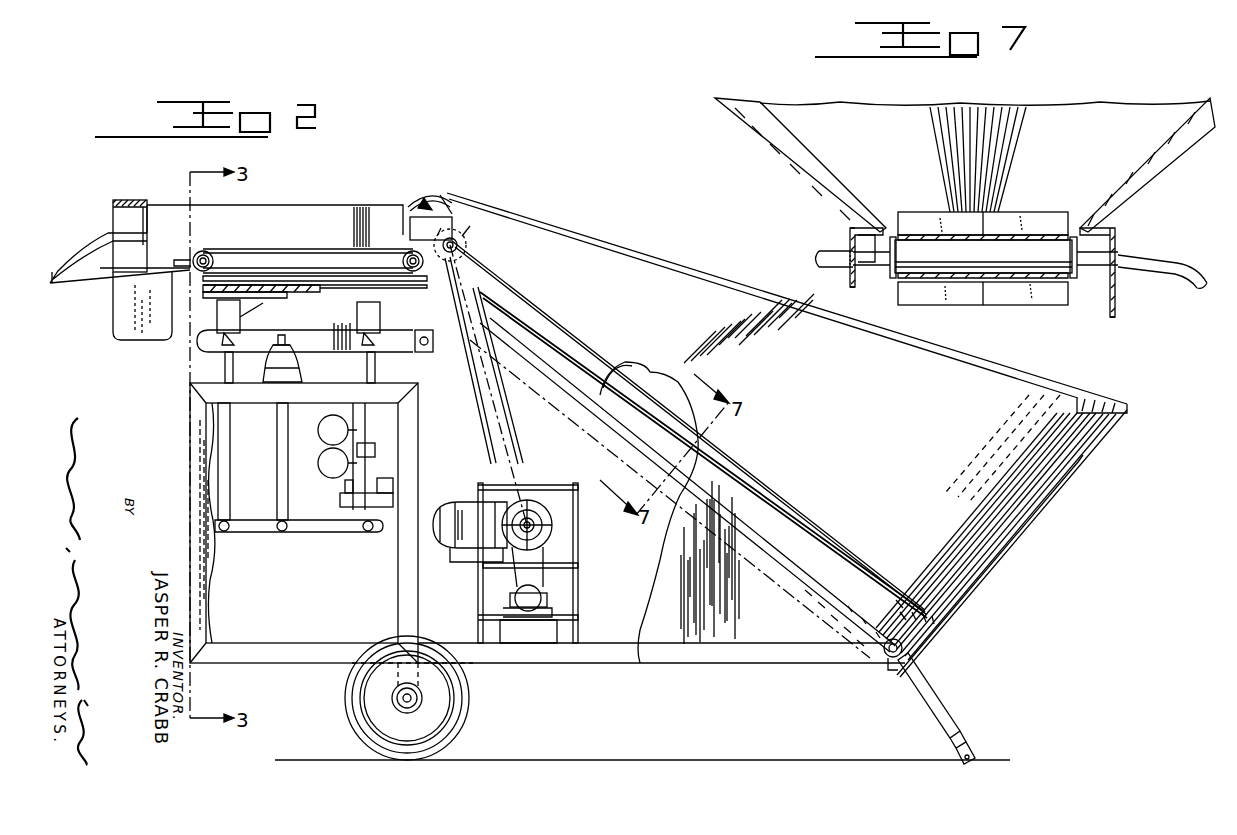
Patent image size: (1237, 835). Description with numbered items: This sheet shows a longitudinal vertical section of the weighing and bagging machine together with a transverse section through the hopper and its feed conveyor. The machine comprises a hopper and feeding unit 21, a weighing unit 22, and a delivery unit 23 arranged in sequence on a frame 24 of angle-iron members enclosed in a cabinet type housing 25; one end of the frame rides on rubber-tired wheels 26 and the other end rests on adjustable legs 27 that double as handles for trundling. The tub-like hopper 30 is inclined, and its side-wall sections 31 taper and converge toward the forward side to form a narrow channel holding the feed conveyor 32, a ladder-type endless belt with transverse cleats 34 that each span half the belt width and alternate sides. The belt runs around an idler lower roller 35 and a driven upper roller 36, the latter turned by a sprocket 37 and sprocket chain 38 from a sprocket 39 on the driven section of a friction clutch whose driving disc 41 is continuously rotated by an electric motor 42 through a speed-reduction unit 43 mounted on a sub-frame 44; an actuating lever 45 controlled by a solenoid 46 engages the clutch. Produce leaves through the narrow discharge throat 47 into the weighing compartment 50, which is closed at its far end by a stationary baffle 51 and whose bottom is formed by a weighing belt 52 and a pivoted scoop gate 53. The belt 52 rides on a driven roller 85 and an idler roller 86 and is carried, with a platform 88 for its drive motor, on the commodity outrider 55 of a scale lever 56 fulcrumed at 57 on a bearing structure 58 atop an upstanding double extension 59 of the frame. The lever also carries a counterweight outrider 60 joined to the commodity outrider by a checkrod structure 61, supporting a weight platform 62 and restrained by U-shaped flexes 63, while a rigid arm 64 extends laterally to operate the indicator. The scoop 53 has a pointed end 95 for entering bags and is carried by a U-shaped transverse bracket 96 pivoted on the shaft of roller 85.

In FIG. 2, the hopper and feeding unit 21 is at (618, 240).
In FIG. 2, the weighing unit 22 is at (328, 212).
In FIG. 2, the delivery unit 23 is at (98, 224).
In FIG. 2, the frame 24 is at (604, 393).
In FIG. 7, the frame 24 is at (857, 228).
In FIG. 2, the cabinet type housing 25 is at (200, 455).
In FIG. 7, the cabinet type housing 25 is at (850, 276).
In FIG. 2, the rubber-tired wheels 26 is at (470, 700).
In FIG. 2, the legs 27 is at (918, 706).
In FIG. 7, the legs 27 is at (825, 251).
In FIG. 2, the hopper 30 is at (744, 280).
In FIG. 7, the hopper 30 is at (808, 85).
In FIG. 2, the side-wall sections 31 is at (1002, 522).
In FIG. 7, the side-wall sections 31 is at (752, 118).
In FIG. 2, the feed conveyor 32 is at (830, 640).
In FIG. 7, the feed conveyor 32 is at (932, 228).
In FIG. 2, the cleats 34 is at (645, 380).
In FIG. 7, the cleats 34 is at (995, 304).
In FIG. 2, the lower roller 35 is at (884, 660).
In FIG. 7, the lower roller 35 is at (898, 272).
In FIG. 2, the upper roller 36 is at (468, 242).
In FIG. 2, the sprocket 37 is at (450, 198).
In FIG. 2, the sprocket chain 38 is at (490, 480).
In FIG. 2, the sprocket 39 is at (538, 486).
In FIG. 2, the driving disc 41 is at (552, 525).
In FIG. 2, the electric motor 42 is at (456, 504).
In FIG. 2, the speed-reduction unit 43 is at (550, 537).
In FIG. 2, the sub-frame 44 is at (578, 567).
In FIG. 2, the actuating lever 45 is at (560, 500).
In FIG. 2, the solenoid 46 is at (548, 600).
In FIG. 2, the discharge throat 47 is at (425, 200).
In FIG. 2, the weighing compartment 50 is at (305, 218).
In FIG. 2, the stationary baffle 51 is at (143, 210).
In FIG. 2, the weighing belt 52 is at (250, 248).
In FIG. 2, the scoop gate 53 is at (106, 280).
In FIG. 2, the commodity outrider 55 is at (232, 432).
In FIG. 2, the beam or lever 56 is at (297, 330).
In FIG. 2, the fulcrum 57 is at (300, 348).
In FIG. 2, the bearing structure 58 is at (292, 342).
In FIG. 2, the upstanding double extension 59 is at (272, 362).
In FIG. 2, the counterweight outrider 60 is at (400, 412).
In FIG. 2, the checkrod structure 61 is at (250, 530).
In FIG. 2, the weight platform 62 is at (338, 499).
In FIG. 2, the flexes 63 is at (318, 430).
In FIG. 2, the rigid arm 64 is at (426, 346).
In FIG. 2, the roller 85 is at (204, 250).
In FIG. 2, the roller 86 is at (411, 236).
In FIG. 2, the platform 88 is at (320, 290).
In FIG. 2, the pointed end 95 is at (52, 270).
In FIG. 2, the transverse bracket 96 is at (182, 257).